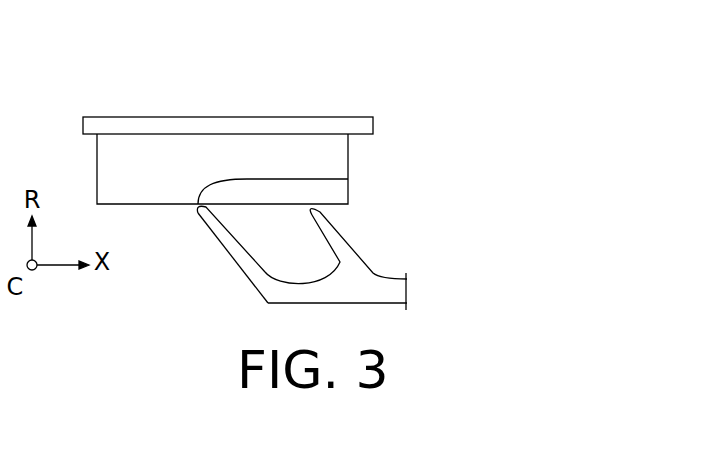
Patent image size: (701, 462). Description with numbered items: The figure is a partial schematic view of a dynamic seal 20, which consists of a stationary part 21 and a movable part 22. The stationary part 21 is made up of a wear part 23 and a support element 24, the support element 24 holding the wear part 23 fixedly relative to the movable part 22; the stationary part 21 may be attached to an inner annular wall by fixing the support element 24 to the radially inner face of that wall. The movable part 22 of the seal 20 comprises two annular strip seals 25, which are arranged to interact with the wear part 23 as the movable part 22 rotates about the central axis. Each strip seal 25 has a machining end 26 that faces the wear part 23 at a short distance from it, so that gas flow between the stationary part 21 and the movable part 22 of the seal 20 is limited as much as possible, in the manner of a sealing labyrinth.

The dynamic seal 20 is at (354, 166).
The stationary part 21 is at (268, 113).
The movable part 22 is at (325, 256).
The wear part 23 is at (258, 150).
The support element 24 is at (177, 127).
The annular strip seals 25 is at (235, 225).
The machining end 26 is at (310, 203).